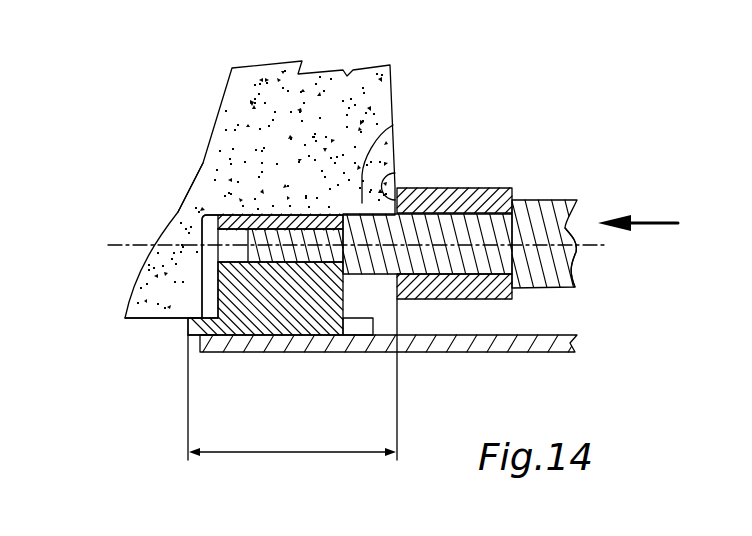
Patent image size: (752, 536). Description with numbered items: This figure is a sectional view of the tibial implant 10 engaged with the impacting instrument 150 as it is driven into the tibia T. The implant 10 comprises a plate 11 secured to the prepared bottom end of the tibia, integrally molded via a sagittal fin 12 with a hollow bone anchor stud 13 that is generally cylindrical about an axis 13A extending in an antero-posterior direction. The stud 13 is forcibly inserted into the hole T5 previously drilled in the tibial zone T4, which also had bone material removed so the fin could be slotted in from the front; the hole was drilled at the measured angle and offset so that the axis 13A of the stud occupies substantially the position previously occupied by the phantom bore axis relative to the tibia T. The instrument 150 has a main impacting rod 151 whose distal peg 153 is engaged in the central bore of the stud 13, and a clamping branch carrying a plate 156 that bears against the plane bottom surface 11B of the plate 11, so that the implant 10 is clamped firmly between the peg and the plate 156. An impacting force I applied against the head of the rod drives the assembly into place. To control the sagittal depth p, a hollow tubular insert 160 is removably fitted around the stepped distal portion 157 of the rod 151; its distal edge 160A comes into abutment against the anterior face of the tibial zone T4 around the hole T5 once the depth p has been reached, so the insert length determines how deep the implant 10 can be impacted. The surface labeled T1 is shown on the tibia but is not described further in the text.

The tibia T is at (199, 122).
The tibial zone T4 is at (393, 125).
The distal edge 160A is at (393, 172).
The bone anchor stud 13 is at (236, 214).
The hole T5 is at (187, 229).
The axis 13A is at (128, 245).
The peg 153 is at (246, 253).
The tibial implant 10 is at (214, 307).
The tire bottom surface T1 is at (164, 319).
The plate 11 is at (299, 316).
The plane bottom surface 11B is at (243, 336).
The sagittal fin 12 is at (346, 290).
The distal portion 157 is at (422, 262).
The plate 156 is at (465, 338).
The insert 160 is at (513, 184).
The instrument 150 is at (587, 202).
The main impacting rod 151 is at (565, 267).
The impacting force I is at (649, 224).
The depth p is at (292, 379).